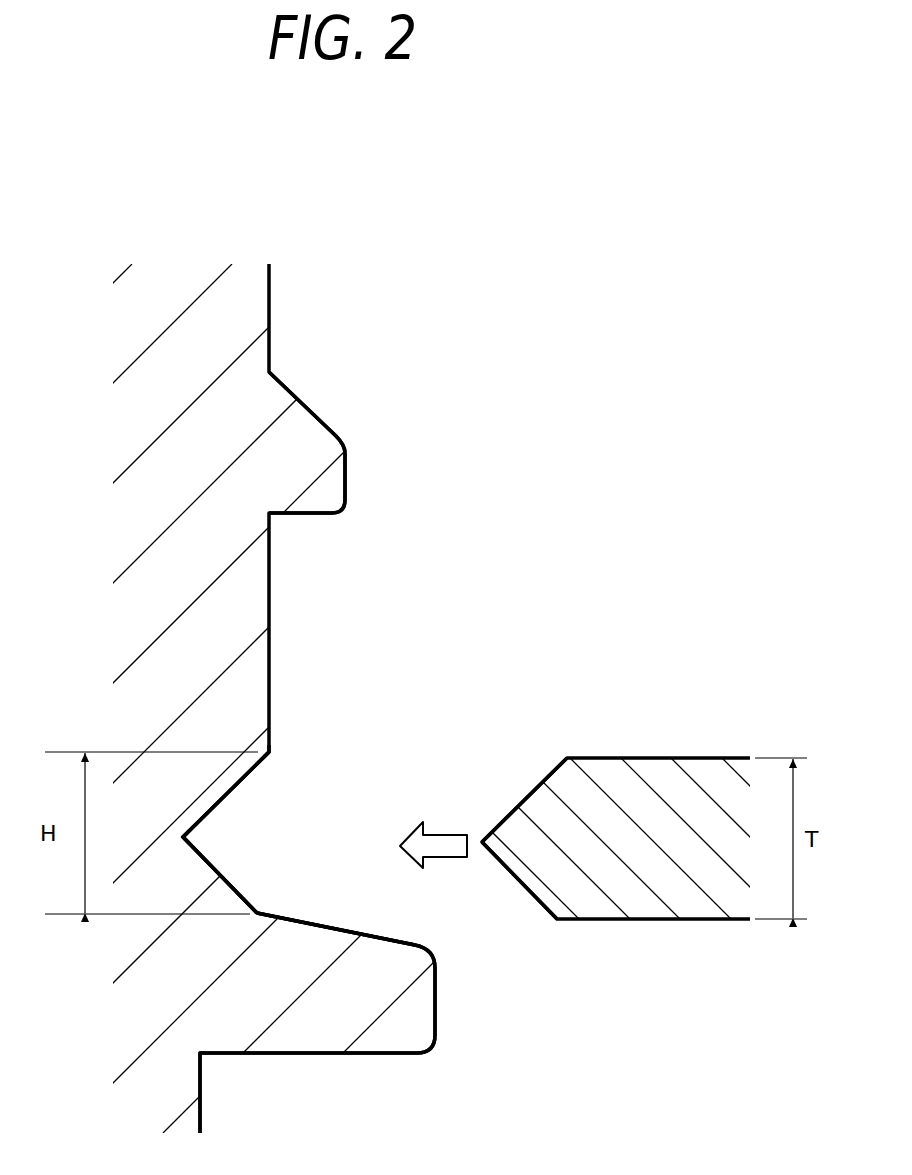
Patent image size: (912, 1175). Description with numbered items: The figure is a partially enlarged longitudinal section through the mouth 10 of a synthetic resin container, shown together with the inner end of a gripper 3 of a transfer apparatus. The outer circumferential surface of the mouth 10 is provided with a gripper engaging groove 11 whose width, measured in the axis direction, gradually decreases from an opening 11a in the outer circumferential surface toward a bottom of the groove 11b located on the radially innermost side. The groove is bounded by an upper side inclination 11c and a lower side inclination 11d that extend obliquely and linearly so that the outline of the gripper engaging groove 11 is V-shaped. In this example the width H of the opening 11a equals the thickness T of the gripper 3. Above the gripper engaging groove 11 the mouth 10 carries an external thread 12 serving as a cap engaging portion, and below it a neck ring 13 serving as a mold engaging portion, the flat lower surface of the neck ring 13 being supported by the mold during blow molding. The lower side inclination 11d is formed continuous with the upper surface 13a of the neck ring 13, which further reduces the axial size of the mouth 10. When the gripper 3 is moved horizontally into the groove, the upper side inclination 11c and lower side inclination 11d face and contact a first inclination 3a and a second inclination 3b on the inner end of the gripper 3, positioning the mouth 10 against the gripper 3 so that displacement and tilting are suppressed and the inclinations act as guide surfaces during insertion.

The gripper 3 is at (637, 758).
The first inclination 3a is at (527, 795).
The second inclination 3b is at (525, 888).
The mouth 10 is at (277, 665).
The gripper engaging groove 11 is at (265, 860).
The opening 11a is at (270, 753).
The bottom of the groove 11b is at (184, 837).
The upper side inclination 11c is at (242, 780).
The lower side inclination 11d is at (242, 895).
The external thread 12 is at (322, 422).
The neck ring 13 is at (435, 1002).
The upper surface of the neck ring 13a is at (405, 941).